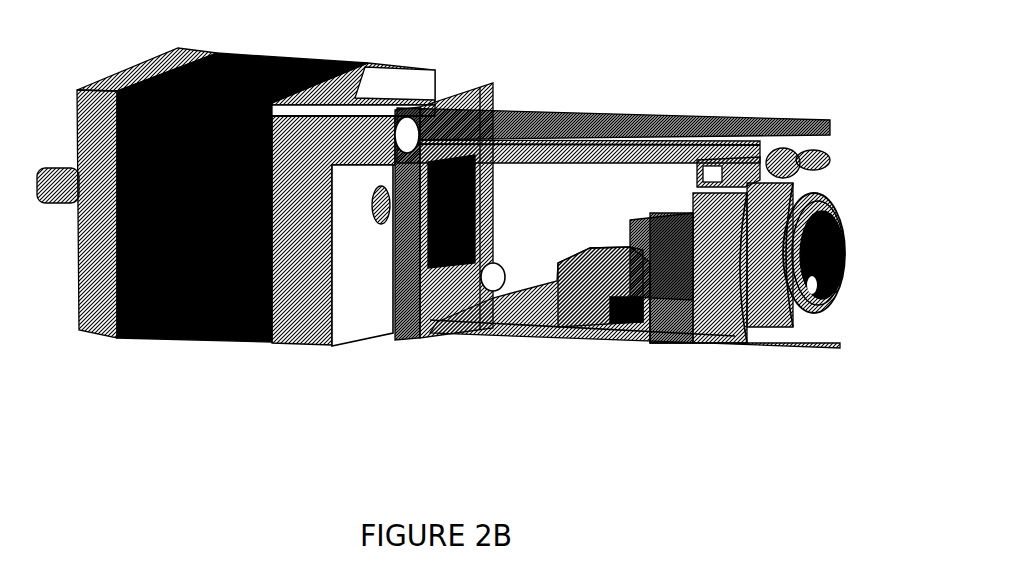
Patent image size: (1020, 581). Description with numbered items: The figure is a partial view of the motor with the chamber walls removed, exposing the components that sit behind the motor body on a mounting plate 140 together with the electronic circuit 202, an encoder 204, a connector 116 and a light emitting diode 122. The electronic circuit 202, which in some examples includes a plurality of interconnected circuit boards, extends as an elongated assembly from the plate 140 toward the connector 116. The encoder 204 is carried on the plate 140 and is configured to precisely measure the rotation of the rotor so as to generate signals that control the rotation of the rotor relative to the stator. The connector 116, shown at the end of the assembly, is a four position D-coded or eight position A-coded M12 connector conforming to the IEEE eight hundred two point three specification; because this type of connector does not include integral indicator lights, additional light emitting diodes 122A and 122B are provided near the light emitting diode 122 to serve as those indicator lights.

The mounting plate 140 is at (452, 197).
The electronic circuit 202 is at (547, 112).
The light emitting diode 122 is at (821, 153).
The light emitting diode 122A is at (745, 186).
The light emitting diode 122B is at (778, 163).
The connector 116 is at (820, 193).
The encoder 204 is at (448, 266).